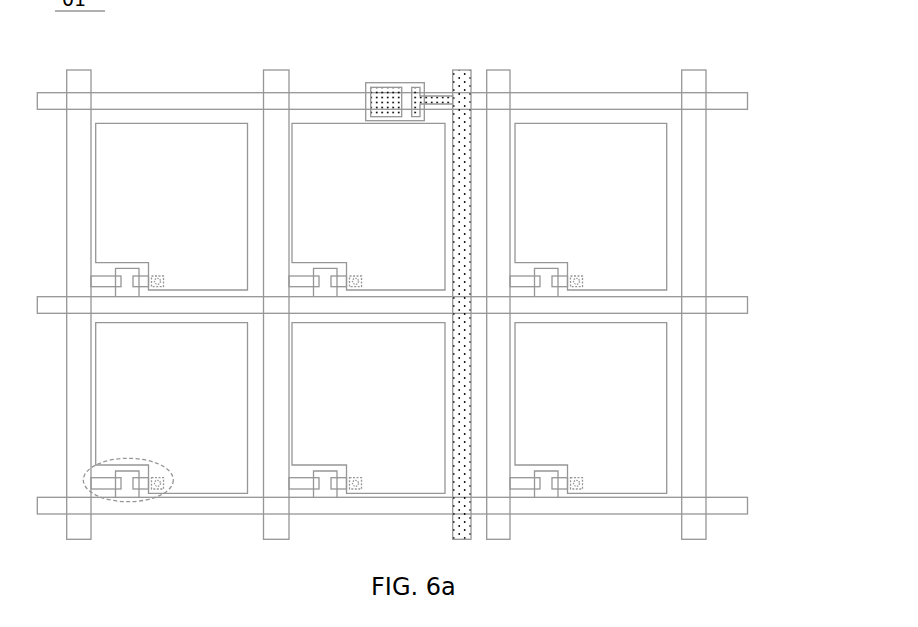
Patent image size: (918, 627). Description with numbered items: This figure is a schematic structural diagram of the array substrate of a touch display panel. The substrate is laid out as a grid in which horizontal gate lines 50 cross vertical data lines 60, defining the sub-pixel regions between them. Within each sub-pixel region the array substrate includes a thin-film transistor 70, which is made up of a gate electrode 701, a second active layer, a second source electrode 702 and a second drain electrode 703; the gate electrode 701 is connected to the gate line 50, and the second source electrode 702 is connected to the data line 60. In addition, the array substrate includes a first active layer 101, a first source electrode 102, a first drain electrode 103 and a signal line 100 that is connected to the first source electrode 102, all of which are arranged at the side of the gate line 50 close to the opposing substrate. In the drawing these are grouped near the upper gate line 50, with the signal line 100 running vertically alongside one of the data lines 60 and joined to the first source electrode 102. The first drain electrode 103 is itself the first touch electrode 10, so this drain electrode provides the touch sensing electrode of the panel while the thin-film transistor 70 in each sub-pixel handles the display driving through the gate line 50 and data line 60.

The first touch electrode 10 is at (392, 85).
The gate line 50 is at (730, 105).
The data line 60 is at (77, 83).
The thin-film transistor 70 is at (124, 484).
The signal line 100 is at (463, 82).
The first active layer 101 is at (366, 90).
The first source electrode 102 is at (438, 83).
The first drain electrode 103 is at (392, 85).
The gate electrode 701 is at (123, 490).
The second source electrode 702 is at (92, 485).
The second drain electrode 703 is at (147, 482).